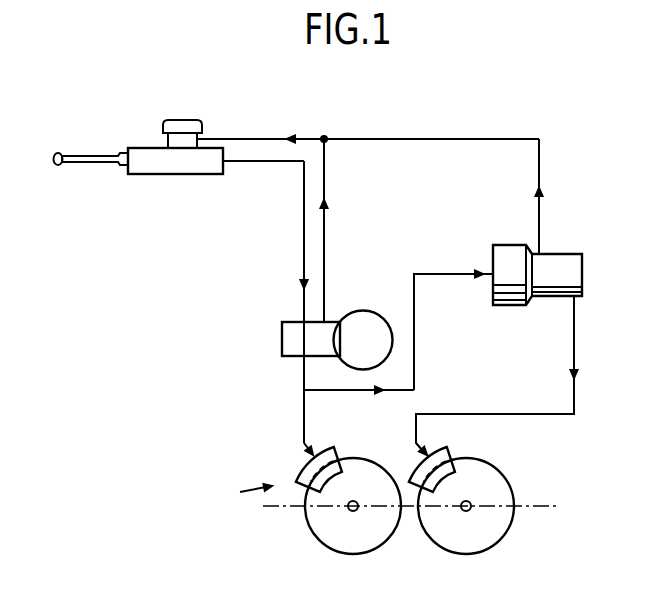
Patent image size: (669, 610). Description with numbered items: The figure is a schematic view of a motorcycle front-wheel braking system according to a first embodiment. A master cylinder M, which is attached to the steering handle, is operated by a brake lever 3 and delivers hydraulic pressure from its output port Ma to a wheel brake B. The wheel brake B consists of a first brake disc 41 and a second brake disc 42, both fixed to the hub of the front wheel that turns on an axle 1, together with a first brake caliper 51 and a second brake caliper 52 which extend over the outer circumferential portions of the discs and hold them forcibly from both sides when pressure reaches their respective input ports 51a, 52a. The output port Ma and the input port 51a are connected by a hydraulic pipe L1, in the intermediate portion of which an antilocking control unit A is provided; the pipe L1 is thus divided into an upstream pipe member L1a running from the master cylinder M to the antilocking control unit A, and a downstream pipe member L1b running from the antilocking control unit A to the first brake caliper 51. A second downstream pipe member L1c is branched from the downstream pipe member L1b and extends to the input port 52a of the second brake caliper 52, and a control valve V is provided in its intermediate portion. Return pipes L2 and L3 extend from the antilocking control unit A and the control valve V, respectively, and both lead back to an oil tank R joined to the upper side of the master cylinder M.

The axle 1 is at (533, 506).
The brake lever 3 is at (85, 156).
The oil tank R is at (183, 131).
The master cylinder M is at (157, 174).
The output port Ma is at (224, 166).
The hydraulic pipe L1 is at (302, 227).
The upstream pipe member L1a is at (304, 273).
The downstream pipe member L1b is at (304, 401).
The second downstream pipe member L1c is at (414, 343).
The return pipe L2 is at (324, 227).
The return pipe L3 is at (539, 209).
The antilocking control unit A is at (282, 336).
The control valve V is at (557, 254).
The wheel brake B is at (243, 492).
The first brake disc 41 is at (375, 541).
The second brake disc 42 is at (493, 542).
The first brake caliper 51 is at (334, 446).
The input port 51a is at (311, 458).
The second brake caliper 52 is at (452, 450).
The input port 52a is at (414, 461).